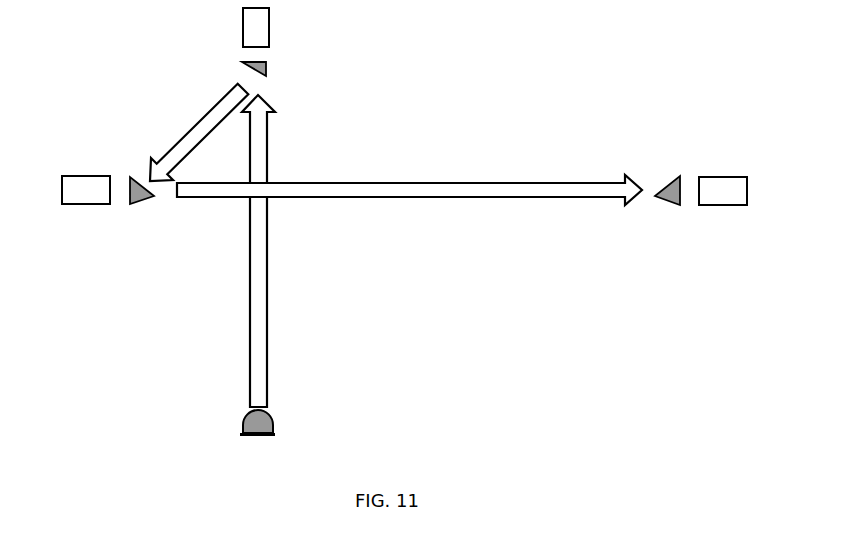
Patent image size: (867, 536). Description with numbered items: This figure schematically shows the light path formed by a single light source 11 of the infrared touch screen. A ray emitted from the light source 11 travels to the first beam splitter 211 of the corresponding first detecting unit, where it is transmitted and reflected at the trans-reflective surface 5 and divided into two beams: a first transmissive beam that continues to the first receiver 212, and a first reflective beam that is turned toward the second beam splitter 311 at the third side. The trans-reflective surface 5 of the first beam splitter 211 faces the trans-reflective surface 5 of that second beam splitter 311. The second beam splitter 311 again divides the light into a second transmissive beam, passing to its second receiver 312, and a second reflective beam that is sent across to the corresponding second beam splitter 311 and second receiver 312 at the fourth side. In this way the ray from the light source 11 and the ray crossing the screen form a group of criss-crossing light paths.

The trans-reflective surface 5 is at (255, 68).
The light source 11 is at (278, 422).
The first beam splitter 211 is at (268, 72).
The first receiver 212 is at (269, 25).
The second beam splitter 311 is at (132, 176).
The second receiver 312 is at (85, 183).